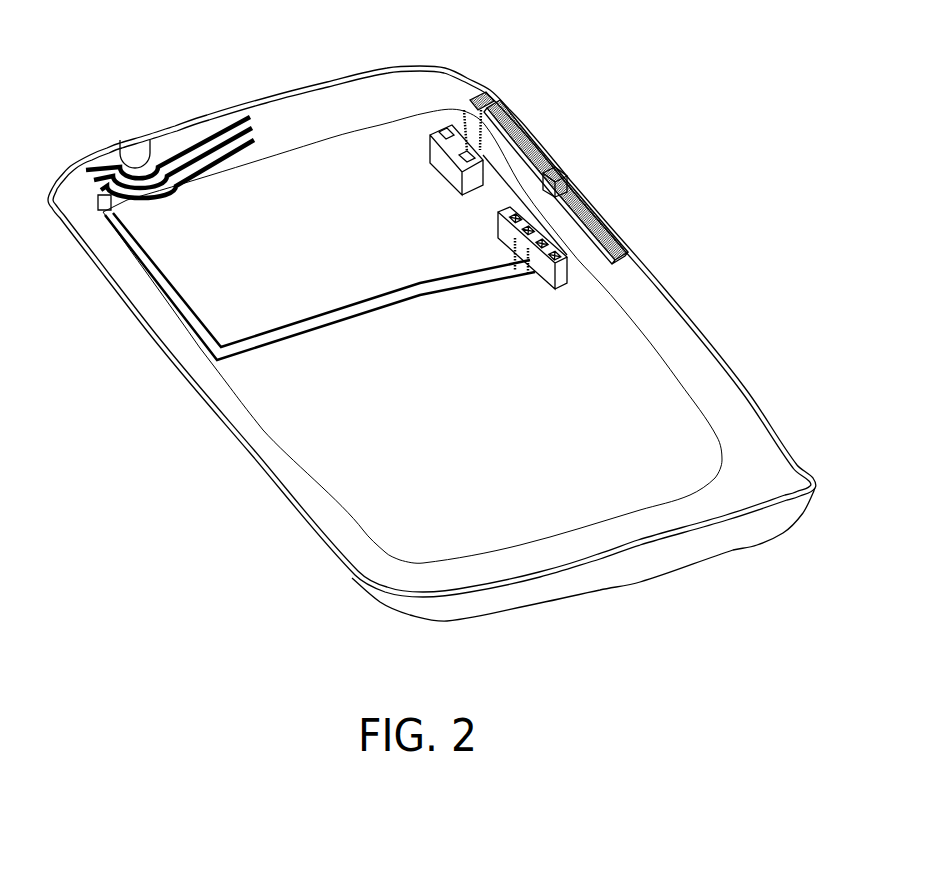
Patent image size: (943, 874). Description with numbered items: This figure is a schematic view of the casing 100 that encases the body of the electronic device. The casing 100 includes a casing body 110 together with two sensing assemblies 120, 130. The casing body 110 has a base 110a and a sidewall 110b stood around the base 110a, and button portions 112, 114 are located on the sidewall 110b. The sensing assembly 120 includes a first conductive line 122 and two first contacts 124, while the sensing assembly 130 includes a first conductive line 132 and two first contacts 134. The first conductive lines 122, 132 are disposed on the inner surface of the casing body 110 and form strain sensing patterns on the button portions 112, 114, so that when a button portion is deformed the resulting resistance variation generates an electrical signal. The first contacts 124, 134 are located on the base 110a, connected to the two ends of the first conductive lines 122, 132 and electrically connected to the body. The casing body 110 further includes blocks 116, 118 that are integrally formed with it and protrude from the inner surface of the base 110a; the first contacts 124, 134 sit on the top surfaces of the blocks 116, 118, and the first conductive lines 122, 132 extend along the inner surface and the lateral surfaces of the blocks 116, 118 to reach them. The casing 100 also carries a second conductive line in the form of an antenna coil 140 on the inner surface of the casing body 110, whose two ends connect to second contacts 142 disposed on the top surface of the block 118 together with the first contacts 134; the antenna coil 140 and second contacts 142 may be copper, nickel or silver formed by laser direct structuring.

The casing 100 is at (432, 327).
The casing body 110 is at (266, 97).
The base 110a is at (410, 470).
The sidewall 110b is at (675, 333).
The button portion 112 is at (537, 127).
The button portion 114 is at (602, 200).
The block 116 is at (435, 147).
The block 118 is at (503, 213).
The sensing assembly 120 is at (540, 82).
The first conductive line 122 is at (490, 102).
The first contacts 124 is at (446, 130).
The sensing assembly 130 is at (630, 239).
The first conductive line 132 is at (567, 255).
The first contacts 134 is at (515, 213).
The antenna coil 140 is at (79, 188).
The second contacts 142 is at (528, 282).